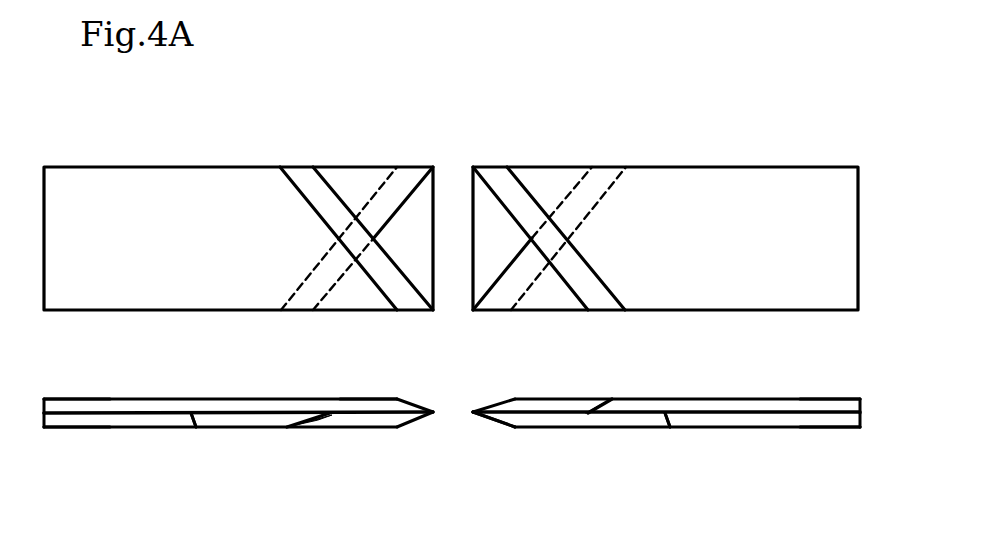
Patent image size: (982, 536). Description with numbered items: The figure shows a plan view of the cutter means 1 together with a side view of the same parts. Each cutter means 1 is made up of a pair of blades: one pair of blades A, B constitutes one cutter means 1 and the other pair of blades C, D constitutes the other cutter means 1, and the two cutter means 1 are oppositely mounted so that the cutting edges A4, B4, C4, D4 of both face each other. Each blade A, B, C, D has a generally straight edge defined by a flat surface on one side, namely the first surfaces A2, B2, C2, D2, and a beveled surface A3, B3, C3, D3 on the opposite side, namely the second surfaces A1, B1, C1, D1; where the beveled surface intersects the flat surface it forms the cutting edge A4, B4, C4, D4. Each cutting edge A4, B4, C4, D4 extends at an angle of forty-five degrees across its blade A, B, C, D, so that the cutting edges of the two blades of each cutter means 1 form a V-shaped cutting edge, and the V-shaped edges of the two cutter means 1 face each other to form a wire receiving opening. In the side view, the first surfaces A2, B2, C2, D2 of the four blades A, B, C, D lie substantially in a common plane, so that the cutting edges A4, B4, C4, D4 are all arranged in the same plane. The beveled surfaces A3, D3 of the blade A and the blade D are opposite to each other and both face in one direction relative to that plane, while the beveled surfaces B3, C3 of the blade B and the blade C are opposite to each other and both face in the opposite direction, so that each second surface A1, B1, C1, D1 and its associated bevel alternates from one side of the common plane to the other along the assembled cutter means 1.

The cutter means 1 is at (151, 107).
The blade A is at (181, 278).
The second surface of blade A A1 is at (79, 398).
The first surface of blade A A2 is at (196, 428).
The beveled surface of blade A A3 is at (410, 399).
The cutting edge of blade A A4 is at (388, 256).
The blade B is at (126, 432).
The second surface of blade B B1 is at (74, 430).
The first surface of blade B B2 is at (348, 186).
The beveled surface of blade B B3 is at (340, 420).
The cutting edge of blade B B4 is at (392, 213).
The blade C is at (758, 432).
The second surface of blade C C1 is at (812, 428).
The first surface of blade C C2 is at (568, 309).
The beveled surface of blade C C3 is at (493, 417).
The cutting edge of blade C C4 is at (488, 286).
The blade D is at (697, 283).
The second surface of blade D D1 is at (815, 398).
The first surface of blade D D2 is at (672, 474).
The beveled surface of blade D D3 is at (603, 312).
The cutting edge of blade D D4 is at (490, 190).